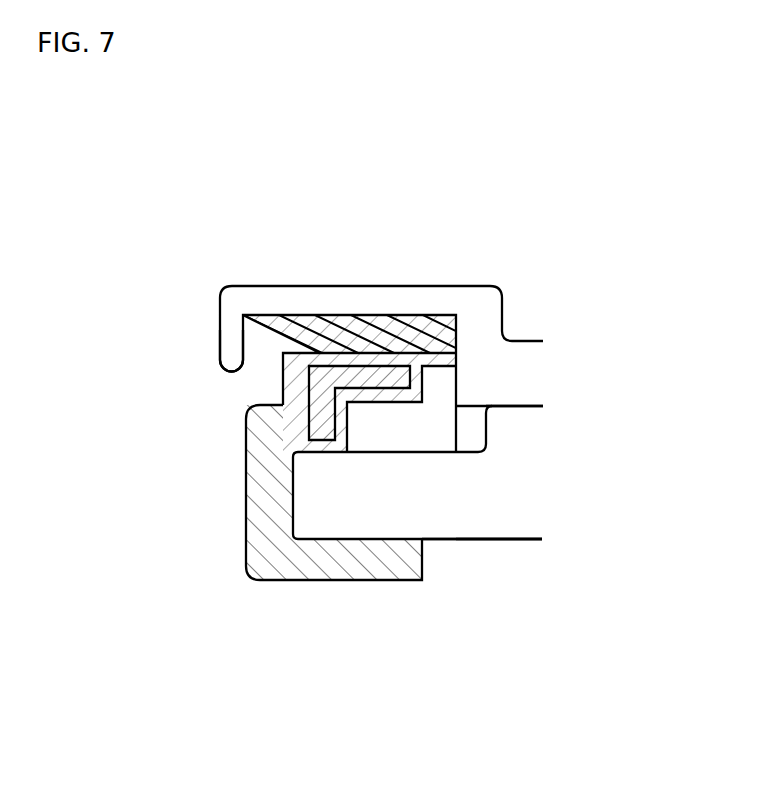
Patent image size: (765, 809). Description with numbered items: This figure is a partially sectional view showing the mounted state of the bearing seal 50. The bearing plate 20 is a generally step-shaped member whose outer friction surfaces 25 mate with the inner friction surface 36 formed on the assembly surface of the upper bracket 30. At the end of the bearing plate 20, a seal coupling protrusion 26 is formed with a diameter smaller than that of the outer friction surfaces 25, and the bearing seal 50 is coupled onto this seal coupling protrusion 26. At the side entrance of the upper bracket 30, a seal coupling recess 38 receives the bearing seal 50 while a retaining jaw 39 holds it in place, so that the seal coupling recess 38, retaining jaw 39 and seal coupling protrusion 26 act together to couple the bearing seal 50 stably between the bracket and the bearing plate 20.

The bearing plate 20 is at (503, 564).
The outer friction surface 25 is at (521, 406).
The seal coupling protrusion 26 is at (337, 503).
The upper bracket 30 is at (478, 252).
The inner friction surface 36 is at (478, 408).
The seal coupling recess 38 is at (410, 330).
The retaining jaw 39 is at (231, 372).
The bearing seal 50 is at (214, 500).